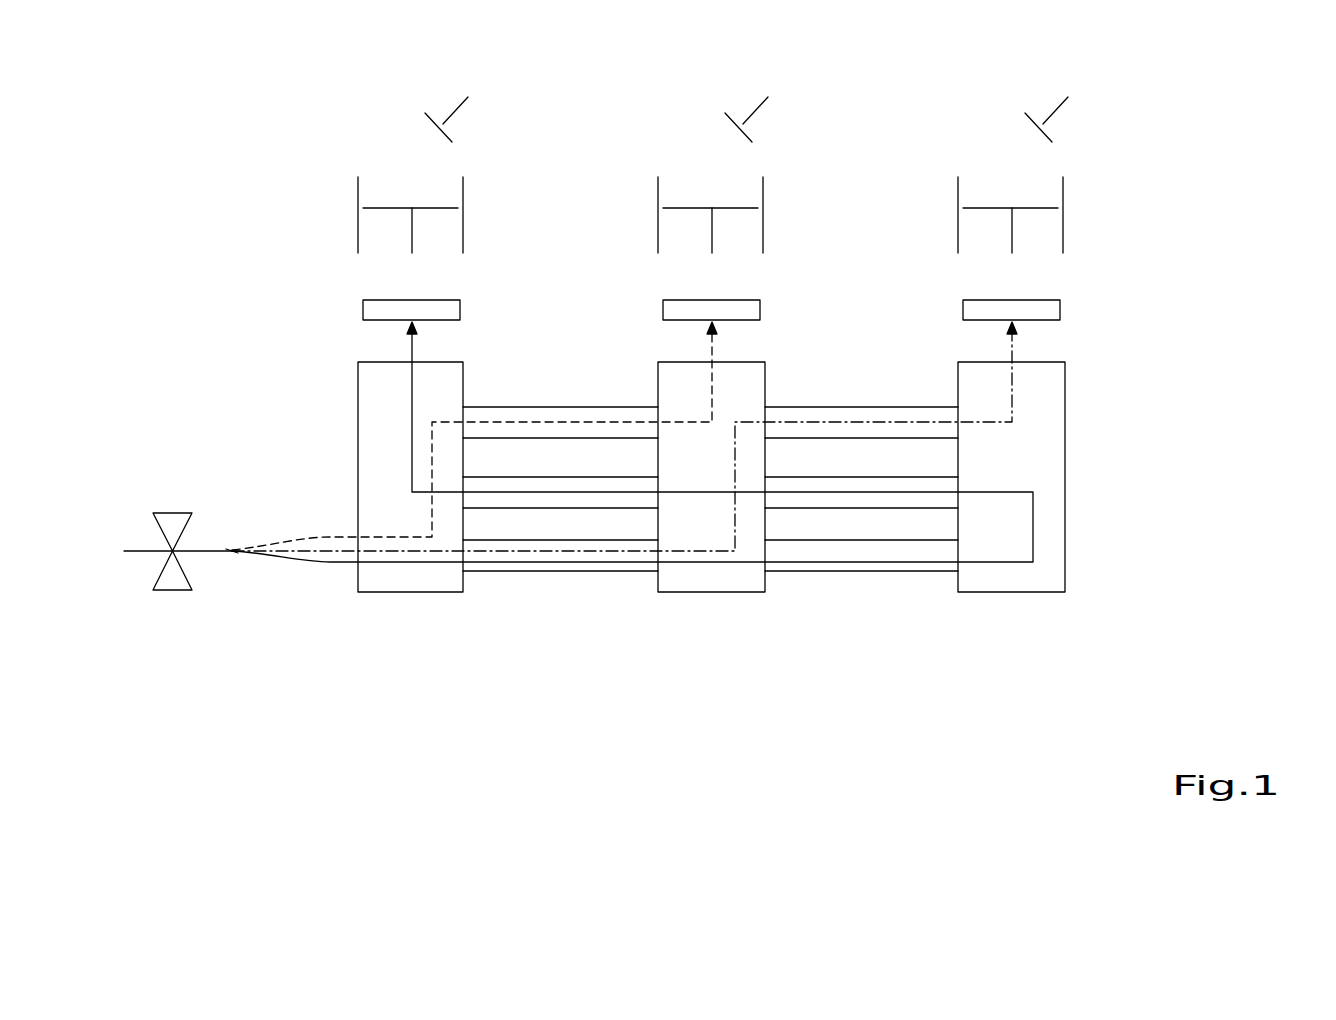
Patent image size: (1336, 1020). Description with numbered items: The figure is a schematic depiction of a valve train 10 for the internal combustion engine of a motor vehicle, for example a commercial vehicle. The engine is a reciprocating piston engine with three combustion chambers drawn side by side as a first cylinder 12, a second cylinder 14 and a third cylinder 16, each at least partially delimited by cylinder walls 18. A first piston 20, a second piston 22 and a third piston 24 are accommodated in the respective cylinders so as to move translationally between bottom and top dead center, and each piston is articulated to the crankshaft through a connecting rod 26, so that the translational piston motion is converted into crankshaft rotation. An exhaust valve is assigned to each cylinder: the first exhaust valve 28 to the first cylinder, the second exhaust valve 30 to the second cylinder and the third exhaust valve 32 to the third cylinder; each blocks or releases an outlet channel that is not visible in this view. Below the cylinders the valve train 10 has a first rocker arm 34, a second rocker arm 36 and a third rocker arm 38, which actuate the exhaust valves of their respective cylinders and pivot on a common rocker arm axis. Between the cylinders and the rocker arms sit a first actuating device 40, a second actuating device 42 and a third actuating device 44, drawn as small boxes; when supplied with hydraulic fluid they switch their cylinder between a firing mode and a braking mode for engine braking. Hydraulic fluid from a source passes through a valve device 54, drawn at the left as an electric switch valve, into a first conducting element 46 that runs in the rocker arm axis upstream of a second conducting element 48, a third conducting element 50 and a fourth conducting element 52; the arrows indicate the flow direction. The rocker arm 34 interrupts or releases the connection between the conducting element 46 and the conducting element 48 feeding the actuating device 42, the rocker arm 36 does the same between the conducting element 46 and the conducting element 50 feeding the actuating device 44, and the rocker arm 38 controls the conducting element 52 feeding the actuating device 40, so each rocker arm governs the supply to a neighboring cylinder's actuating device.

The valve train 10 is at (669, 493).
The first cylinder 12 is at (425, 146).
The second cylinder 14 is at (725, 146).
The third cylinder 16 is at (1025, 146).
The cylinder walls 18 is at (463, 228).
The first piston 20 is at (390, 206).
The second piston 22 is at (690, 206).
The third piston 24 is at (990, 206).
The connecting rods 26 is at (412, 232).
The first exhaust valve 28 is at (460, 111).
The second exhaust valve 30 is at (760, 111).
The third exhaust valve 32 is at (1060, 111).
The first rocker arm 34 is at (410, 578).
The second rocker arm 36 is at (712, 578).
The third rocker arm 38 is at (1013, 578).
The first actuating device 40 is at (460, 307).
The second actuating device 42 is at (760, 307).
The third actuating device 44 is at (1060, 307).
The first conducting element 46 is at (232, 552).
The second conducting element 48 is at (574, 420).
The third conducting element 50 is at (871, 420).
The fourth conducting element 52 is at (910, 491).
The valve device 54 is at (171, 575).